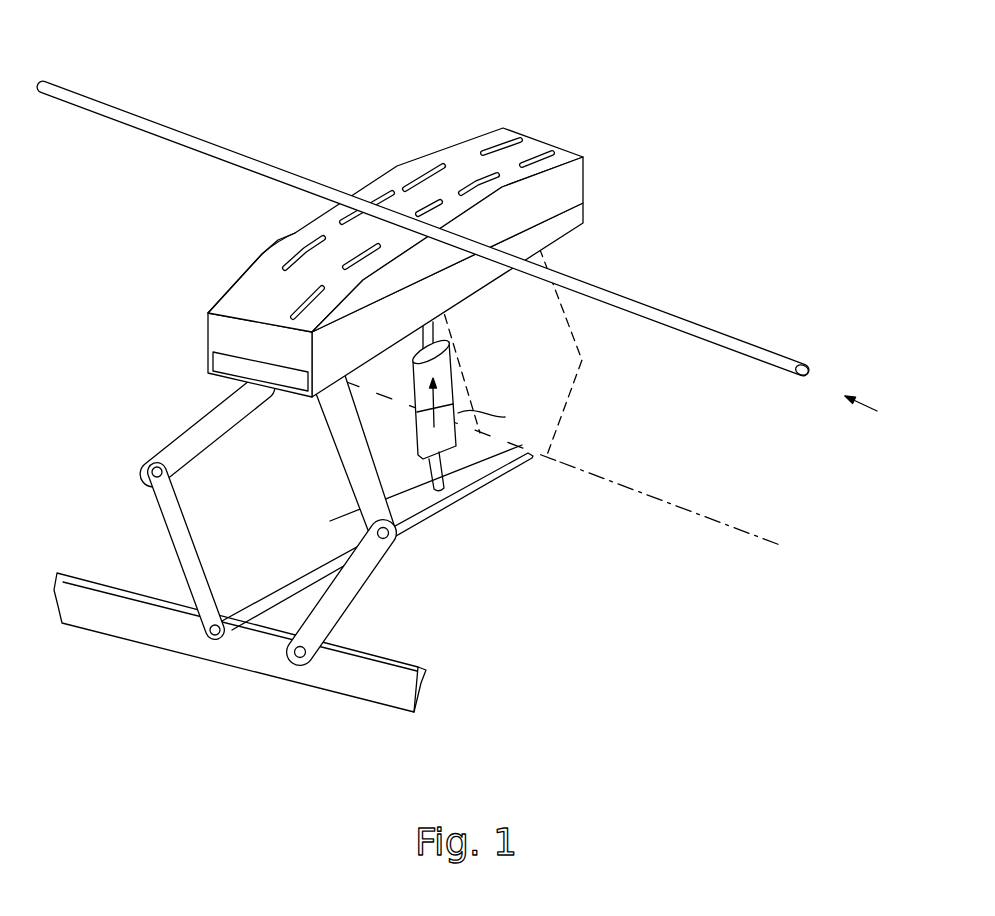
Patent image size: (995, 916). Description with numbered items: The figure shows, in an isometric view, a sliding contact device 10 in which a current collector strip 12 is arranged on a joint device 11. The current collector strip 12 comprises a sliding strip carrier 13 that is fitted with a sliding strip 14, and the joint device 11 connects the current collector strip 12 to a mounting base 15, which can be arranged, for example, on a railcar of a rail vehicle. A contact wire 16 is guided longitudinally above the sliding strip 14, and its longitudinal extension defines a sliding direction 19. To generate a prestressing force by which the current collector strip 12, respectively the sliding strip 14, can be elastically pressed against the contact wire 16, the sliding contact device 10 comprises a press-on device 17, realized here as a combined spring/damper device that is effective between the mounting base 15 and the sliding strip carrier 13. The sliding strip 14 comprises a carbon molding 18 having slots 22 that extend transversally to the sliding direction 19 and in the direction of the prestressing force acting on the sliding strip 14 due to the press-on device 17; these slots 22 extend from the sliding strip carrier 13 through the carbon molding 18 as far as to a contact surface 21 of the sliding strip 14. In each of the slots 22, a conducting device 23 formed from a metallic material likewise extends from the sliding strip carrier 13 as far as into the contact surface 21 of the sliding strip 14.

The sliding contact device 10 is at (460, 373).
The joint device 11 is at (157, 530).
The current collector strip 12 is at (392, 227).
The sliding strip carrier 13 is at (588, 215).
The sliding strip 14 is at (413, 195).
The mounting base 15 is at (393, 650).
The contact wire 16 is at (751, 320).
The press-on device 17 is at (458, 388).
The carbon molding 18 is at (232, 282).
The sliding direction 19 is at (860, 408).
The contact surface 21 is at (463, 157).
The slots 22 is at (512, 145).
The conducting device 23 is at (510, 157).